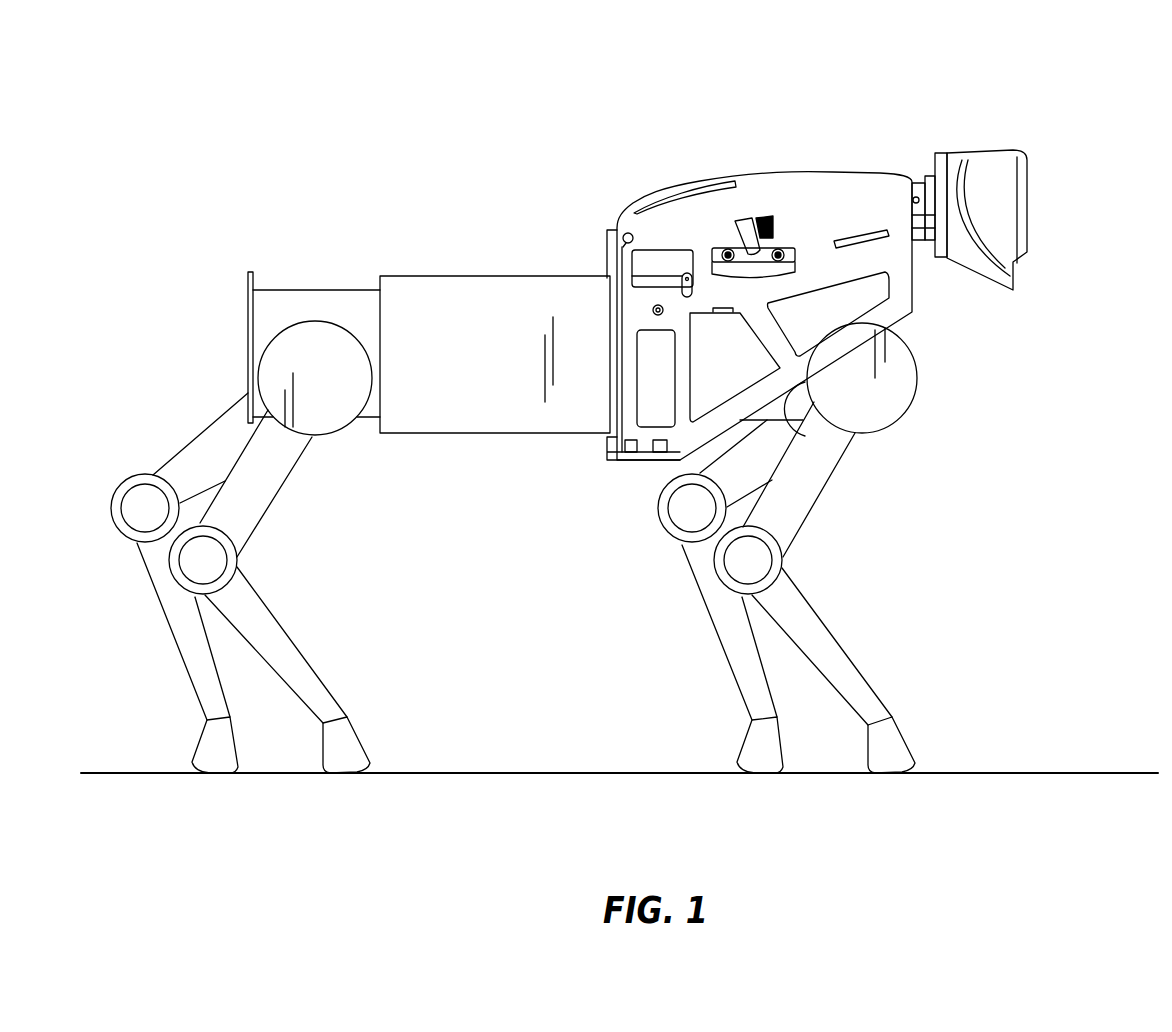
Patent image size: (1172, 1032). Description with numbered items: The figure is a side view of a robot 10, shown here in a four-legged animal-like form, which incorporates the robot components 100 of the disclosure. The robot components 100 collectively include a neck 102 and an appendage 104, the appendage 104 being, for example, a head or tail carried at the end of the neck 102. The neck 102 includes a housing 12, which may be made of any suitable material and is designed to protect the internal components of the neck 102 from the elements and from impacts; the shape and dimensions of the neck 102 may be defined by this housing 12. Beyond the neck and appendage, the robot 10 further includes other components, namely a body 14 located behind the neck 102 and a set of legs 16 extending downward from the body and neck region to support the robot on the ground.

The robot 10 is at (573, 128).
The housing 12 is at (804, 423).
The body 14 is at (492, 298).
The legs 16 is at (200, 645).
The robot components 100 is at (887, 137).
The neck 102 is at (875, 262).
The appendage 104 is at (997, 210).